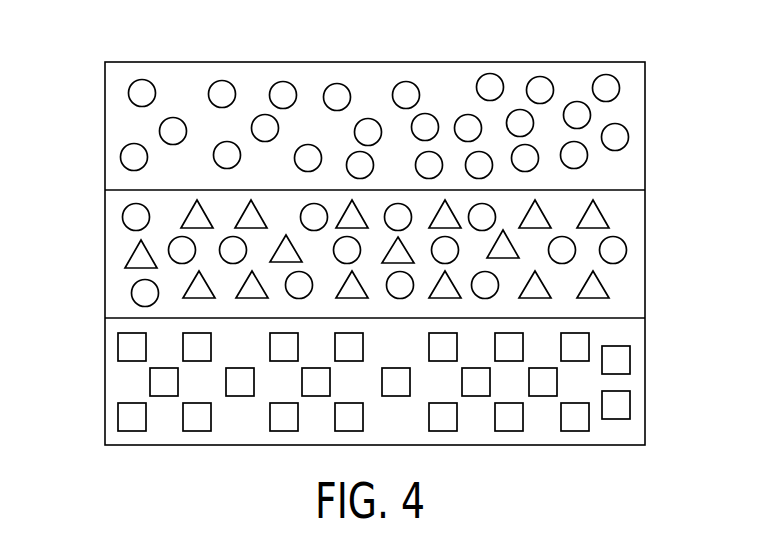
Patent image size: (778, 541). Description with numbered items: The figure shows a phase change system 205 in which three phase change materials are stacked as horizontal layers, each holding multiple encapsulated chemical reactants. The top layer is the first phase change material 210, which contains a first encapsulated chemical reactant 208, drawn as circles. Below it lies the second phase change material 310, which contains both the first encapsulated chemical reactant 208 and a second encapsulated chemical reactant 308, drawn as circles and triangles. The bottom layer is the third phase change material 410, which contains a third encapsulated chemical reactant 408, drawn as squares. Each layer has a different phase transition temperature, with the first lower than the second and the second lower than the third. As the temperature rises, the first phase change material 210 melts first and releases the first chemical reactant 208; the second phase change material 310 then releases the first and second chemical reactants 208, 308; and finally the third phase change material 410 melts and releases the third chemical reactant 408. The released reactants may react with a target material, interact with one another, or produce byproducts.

The phase change system 205 is at (373, 62).
The first phase change material 210 is at (110, 126).
The first encapsulated chemical reactant 208 is at (620, 88).
The second phase change material 310 is at (110, 253).
The second encapsulated chemical reactant 308 is at (606, 288).
The third phase change material 410 is at (110, 383).
The third encapsulated chemical reactant 408 is at (630, 358).